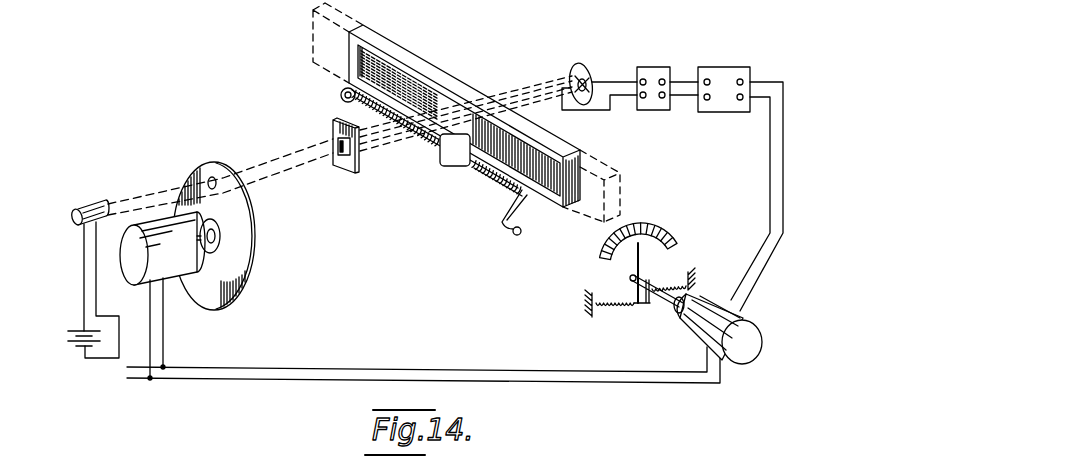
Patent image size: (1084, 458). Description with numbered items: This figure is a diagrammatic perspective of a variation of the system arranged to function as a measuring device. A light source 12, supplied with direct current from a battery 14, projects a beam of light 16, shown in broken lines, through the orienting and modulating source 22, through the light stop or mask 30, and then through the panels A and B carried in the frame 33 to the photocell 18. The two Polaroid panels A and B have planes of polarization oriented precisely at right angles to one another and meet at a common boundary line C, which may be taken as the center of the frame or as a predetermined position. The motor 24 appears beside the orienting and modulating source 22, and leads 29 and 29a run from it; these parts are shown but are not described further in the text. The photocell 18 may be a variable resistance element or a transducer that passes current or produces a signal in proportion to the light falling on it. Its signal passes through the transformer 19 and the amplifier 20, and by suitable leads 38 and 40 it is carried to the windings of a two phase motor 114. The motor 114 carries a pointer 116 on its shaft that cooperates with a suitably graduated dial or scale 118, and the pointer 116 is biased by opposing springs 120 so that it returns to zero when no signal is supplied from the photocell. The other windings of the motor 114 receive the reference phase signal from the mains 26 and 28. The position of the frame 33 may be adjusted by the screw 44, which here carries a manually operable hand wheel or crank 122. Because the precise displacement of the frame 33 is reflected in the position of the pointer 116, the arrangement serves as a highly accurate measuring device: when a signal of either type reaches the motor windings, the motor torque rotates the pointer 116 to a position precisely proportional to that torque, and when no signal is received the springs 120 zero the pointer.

The light source 12 is at (85, 205).
The battery 14 is at (68, 348).
The beam of light 16 is at (133, 195).
The light-sensitive element 18 is at (583, 63).
The transformer 19 is at (650, 67).
The amplifier 20 is at (718, 67).
The orienting and modulating source 22 is at (250, 270).
The disc motor 24 is at (137, 273).
The main 26 is at (357, 347).
The main 28 is at (302, 382).
The motor lead 29 is at (150, 303).
The motor lead 29a is at (165, 337).
The light stop or mask 30 is at (332, 127).
The frame 33 is at (432, 66).
The panel A is at (388, 72).
The panel B is at (543, 155).
The common boundary line C is at (460, 110).
The conductor 38 is at (770, 160).
The conductor 40 is at (762, 278).
The screw 44 is at (493, 183).
The two phase motor 114 is at (752, 345).
The pointer 116 is at (642, 265).
The scale 118 is at (650, 223).
The springs 120 is at (650, 297).
The crank 122 is at (512, 238).